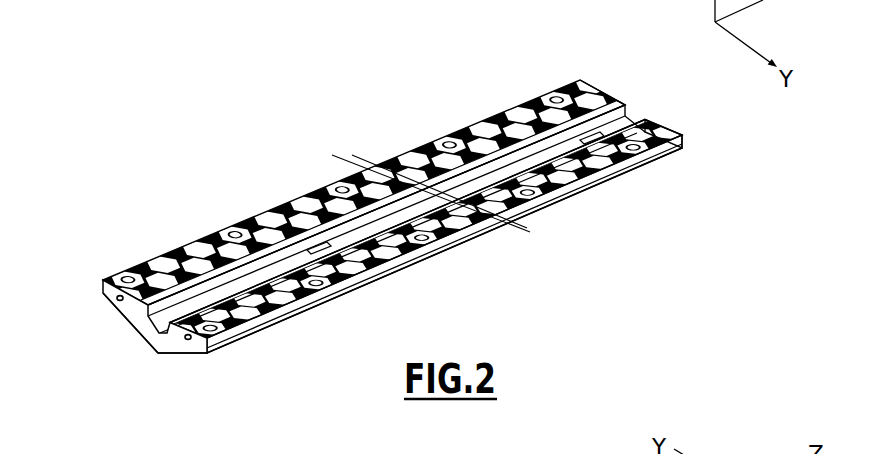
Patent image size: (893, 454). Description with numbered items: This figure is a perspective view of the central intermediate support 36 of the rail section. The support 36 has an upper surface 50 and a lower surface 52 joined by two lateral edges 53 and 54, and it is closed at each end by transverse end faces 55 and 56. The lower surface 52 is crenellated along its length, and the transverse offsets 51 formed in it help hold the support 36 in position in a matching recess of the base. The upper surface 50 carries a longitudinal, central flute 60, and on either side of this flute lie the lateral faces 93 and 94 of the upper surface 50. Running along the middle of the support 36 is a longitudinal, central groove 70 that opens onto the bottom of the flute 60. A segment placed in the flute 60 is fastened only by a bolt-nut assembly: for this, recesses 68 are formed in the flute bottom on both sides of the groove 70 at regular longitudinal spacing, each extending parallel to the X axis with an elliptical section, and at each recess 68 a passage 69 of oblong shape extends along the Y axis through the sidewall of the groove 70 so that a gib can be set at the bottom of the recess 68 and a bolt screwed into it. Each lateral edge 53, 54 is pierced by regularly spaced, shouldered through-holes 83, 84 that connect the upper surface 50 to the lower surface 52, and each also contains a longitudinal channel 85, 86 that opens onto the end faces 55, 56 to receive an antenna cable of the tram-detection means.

The central intermediate support 36 is at (280, 88).
The upper surface 50 is at (148, 255).
The transverse end face 56 is at (668, 116).
The longitudinal and central flute 60 is at (212, 272).
The longitudinal and central groove 70 is at (258, 273).
The recess 68 is at (341, 247).
The passage 69 is at (608, 140).
The through-hole 83 is at (553, 97).
The through-hole 84 is at (530, 200).
The lateral face 93 is at (413, 157).
The lateral face 94 is at (478, 222).
The transverse offset 51 is at (360, 282).
The lower surface 52 is at (200, 368).
The lateral edge 53 is at (88, 289).
The lateral edge 54 is at (222, 366).
The transverse end face 55 is at (150, 348).
The channel 85 is at (118, 302).
The channel 86 is at (186, 341).